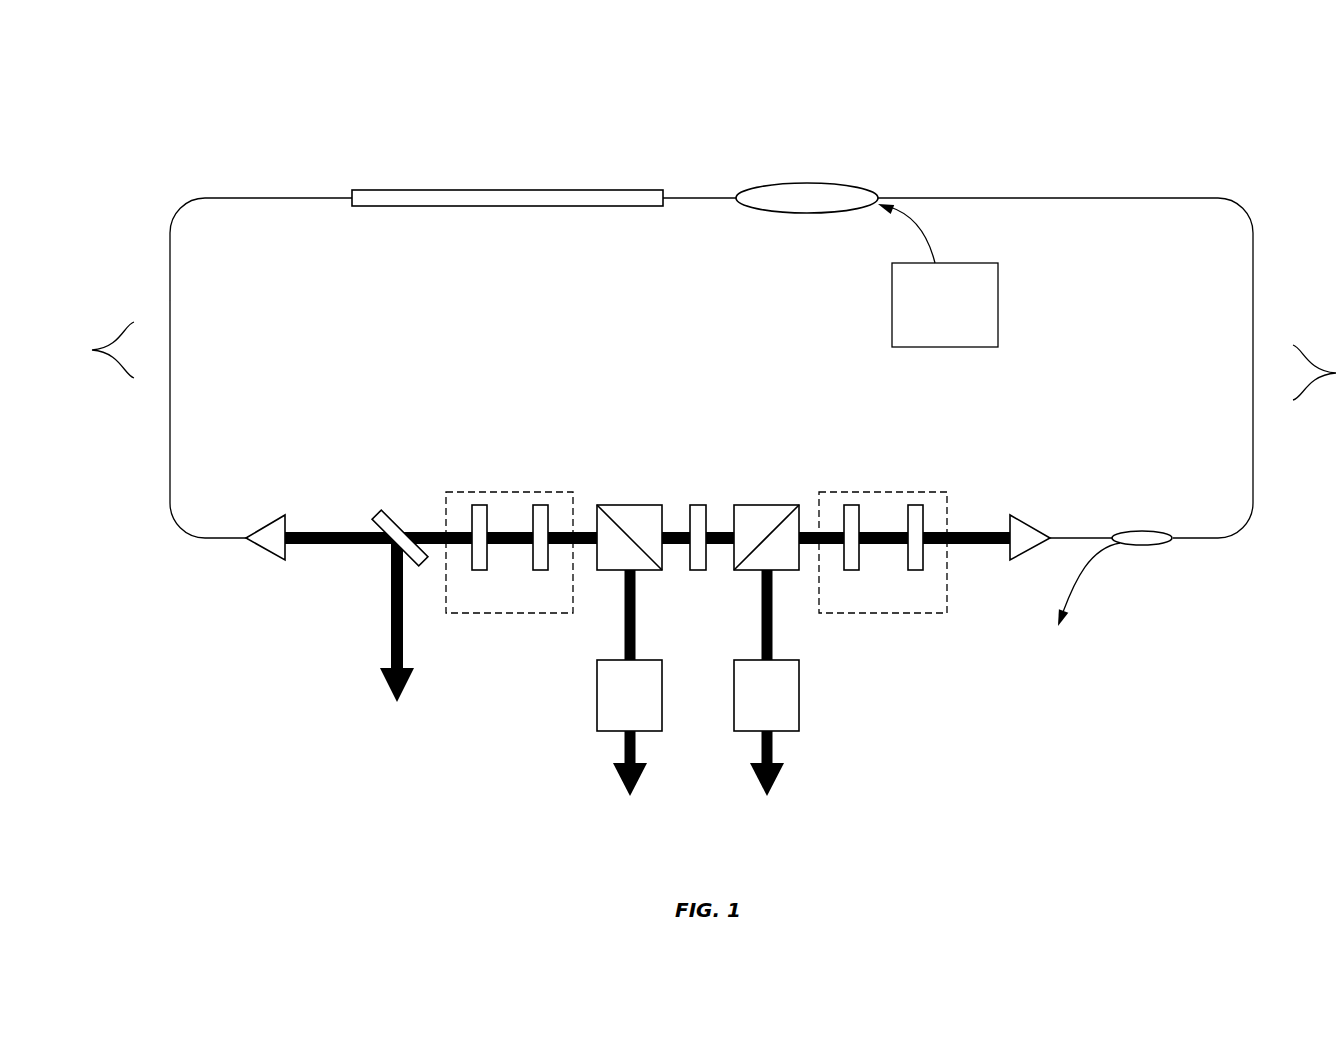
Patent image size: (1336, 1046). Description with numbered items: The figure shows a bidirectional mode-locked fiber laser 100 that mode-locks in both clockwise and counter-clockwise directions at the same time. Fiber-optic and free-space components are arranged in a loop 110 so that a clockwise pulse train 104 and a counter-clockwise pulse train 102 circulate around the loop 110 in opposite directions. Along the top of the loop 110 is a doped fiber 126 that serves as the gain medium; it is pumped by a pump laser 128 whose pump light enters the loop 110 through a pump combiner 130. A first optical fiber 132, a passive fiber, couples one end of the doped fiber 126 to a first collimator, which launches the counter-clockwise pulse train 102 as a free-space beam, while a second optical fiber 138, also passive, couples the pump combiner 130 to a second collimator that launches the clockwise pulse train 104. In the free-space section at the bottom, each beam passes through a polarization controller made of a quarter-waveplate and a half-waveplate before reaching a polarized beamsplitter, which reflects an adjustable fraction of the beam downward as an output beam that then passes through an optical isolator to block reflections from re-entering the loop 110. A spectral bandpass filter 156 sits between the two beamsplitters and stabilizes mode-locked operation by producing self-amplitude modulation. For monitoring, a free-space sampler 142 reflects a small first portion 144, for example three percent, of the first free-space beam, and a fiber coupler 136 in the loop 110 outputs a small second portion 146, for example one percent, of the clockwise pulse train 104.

The bidirectional mode-locked fiber laser 100 is at (68, 128).
The CCW pulse train 102 is at (113, 372).
The CW pulse train 104 is at (1314, 395).
The loop 110 is at (749, 338).
The doped fiber 126 is at (508, 190).
The pump laser 128 is at (931, 333).
The pump combiner 130 is at (807, 183).
The first optical fiber 132 is at (172, 375).
The fiber coupler 136 is at (1142, 531).
The second optical fiber 138 is at (1251, 380).
The free-space sampler 142 is at (383, 516).
The first portion 144 is at (397, 634).
The second portion 146 is at (1079, 599).
The spectral bandpass filter 156 is at (698, 505).